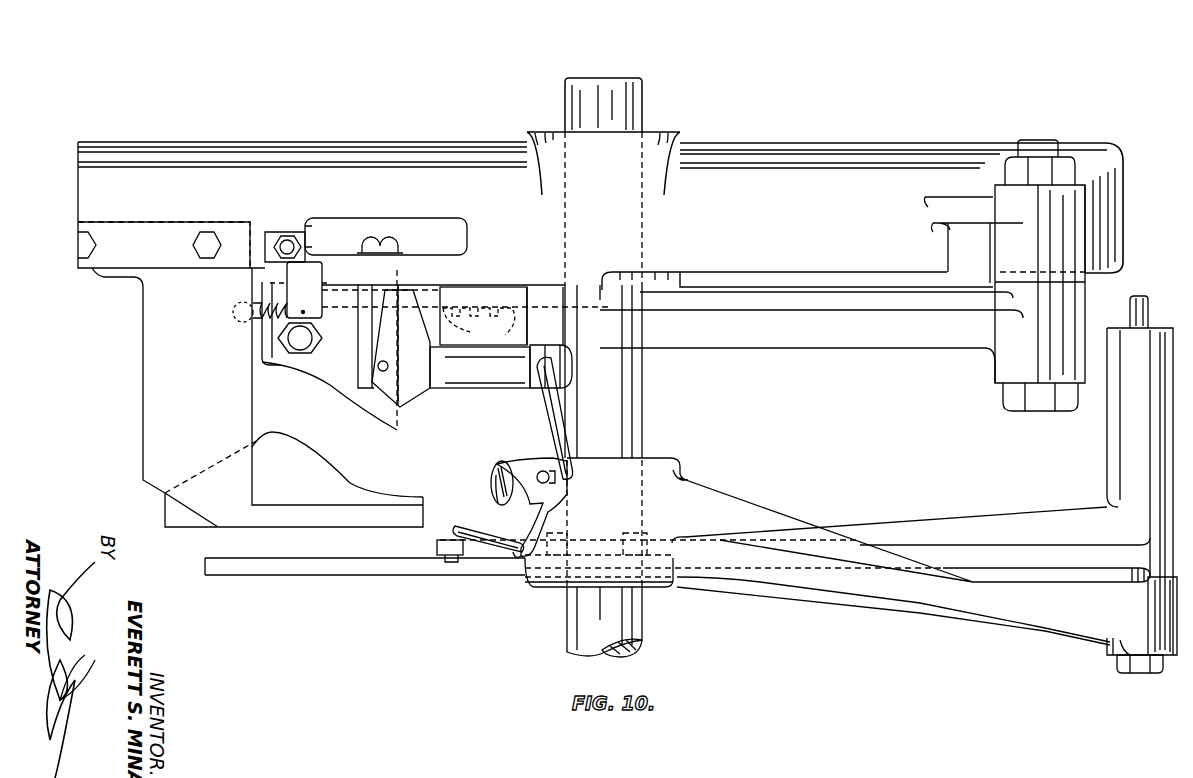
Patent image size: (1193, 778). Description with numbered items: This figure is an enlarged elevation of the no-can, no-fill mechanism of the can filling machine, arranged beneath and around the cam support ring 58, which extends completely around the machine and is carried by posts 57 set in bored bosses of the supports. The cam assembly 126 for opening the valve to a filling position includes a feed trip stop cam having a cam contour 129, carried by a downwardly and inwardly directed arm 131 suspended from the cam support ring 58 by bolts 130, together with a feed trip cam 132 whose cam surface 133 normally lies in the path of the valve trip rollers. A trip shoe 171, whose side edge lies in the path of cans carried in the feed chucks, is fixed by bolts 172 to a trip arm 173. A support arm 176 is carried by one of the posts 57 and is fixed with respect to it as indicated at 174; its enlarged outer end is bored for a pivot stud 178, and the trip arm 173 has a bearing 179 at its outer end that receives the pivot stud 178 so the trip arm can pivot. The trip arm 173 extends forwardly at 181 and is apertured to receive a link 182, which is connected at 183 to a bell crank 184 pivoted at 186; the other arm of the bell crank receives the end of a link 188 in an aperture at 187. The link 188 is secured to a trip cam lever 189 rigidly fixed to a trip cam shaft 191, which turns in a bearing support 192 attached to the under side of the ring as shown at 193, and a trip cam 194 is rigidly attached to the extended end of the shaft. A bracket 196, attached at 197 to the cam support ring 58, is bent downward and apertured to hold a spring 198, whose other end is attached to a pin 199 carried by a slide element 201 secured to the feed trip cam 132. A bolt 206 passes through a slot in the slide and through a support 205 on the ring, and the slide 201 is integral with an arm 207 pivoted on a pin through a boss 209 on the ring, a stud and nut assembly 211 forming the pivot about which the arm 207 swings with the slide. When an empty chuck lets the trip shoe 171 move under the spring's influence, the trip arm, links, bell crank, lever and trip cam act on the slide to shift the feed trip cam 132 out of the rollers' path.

The posts 57 is at (630, 629).
The cam support ring 58 is at (96, 203).
The cam assembly 126 is at (394, 455).
The cam contour 129 is at (350, 492).
The bolts 130 is at (212, 243).
The arm 131 is at (158, 389).
The feed trip cam 132 is at (333, 373).
The cam surface 133 is at (338, 401).
The trip shoe 171 is at (290, 571).
The bolts 172 is at (574, 541).
The trip arm 173 is at (964, 531).
The fixed connection 174 is at (649, 477).
The support arm 176 is at (975, 606).
The pivot stud 178 is at (1141, 306).
The bearing 179 is at (1130, 437).
The forward extension 181 is at (437, 548).
The link 182 is at (490, 540).
The connection 183 is at (524, 548).
The bell crank 184 is at (527, 472).
The pivot 186 is at (495, 470).
The aperture 187 is at (552, 478).
The link 188 is at (562, 436).
The trip cam lever 189 is at (560, 352).
The trip cam shaft 191 is at (381, 370).
The bearing support 192 is at (505, 376).
The attachment 193 is at (483, 316).
The trip cam 194 is at (416, 396).
The bracket 196 is at (303, 277).
The attachment 197 is at (288, 238).
The spring 198 is at (272, 322).
The pin 199 is at (235, 308).
The slide element 201 is at (268, 361).
The support 205 is at (338, 255).
The bolt 206 is at (392, 244).
The arm 207 is at (857, 340).
The boss 209 is at (1063, 251).
The stud and nut assembly 211 is at (1070, 165).